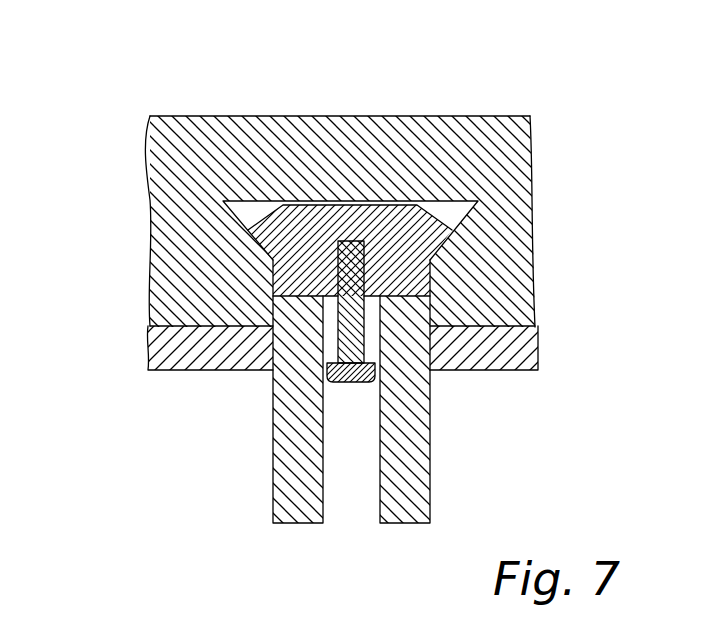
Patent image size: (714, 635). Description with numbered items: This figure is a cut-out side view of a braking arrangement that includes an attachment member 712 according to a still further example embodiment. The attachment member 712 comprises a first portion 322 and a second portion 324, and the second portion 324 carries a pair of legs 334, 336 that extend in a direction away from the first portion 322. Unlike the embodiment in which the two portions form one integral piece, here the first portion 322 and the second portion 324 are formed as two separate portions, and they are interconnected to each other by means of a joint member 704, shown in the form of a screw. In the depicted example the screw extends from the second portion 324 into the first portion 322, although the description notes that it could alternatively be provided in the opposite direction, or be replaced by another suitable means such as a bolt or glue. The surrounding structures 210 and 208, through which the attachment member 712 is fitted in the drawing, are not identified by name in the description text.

The upper block / mold body 210 is at (510, 155).
The plate / base member 208 is at (148, 350).
The first portion 322 is at (283, 222).
The attachment member 712 is at (417, 208).
The joint member 704 is at (356, 267).
The second portion 324 is at (354, 393).
The leg 334 is at (290, 490).
The leg 336 is at (412, 503).